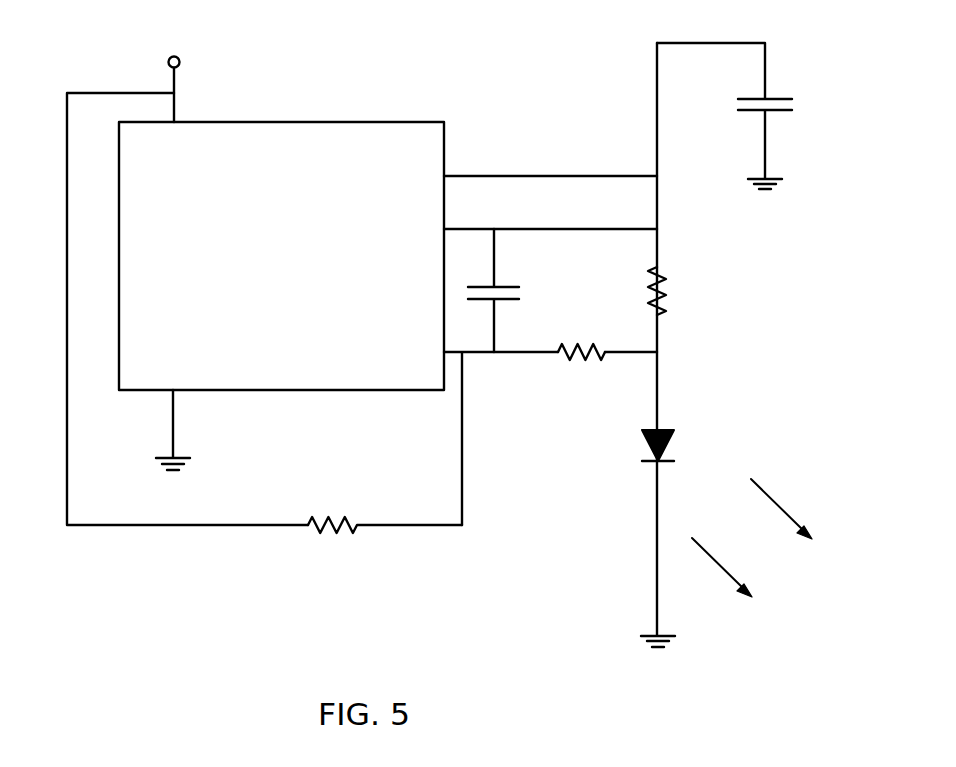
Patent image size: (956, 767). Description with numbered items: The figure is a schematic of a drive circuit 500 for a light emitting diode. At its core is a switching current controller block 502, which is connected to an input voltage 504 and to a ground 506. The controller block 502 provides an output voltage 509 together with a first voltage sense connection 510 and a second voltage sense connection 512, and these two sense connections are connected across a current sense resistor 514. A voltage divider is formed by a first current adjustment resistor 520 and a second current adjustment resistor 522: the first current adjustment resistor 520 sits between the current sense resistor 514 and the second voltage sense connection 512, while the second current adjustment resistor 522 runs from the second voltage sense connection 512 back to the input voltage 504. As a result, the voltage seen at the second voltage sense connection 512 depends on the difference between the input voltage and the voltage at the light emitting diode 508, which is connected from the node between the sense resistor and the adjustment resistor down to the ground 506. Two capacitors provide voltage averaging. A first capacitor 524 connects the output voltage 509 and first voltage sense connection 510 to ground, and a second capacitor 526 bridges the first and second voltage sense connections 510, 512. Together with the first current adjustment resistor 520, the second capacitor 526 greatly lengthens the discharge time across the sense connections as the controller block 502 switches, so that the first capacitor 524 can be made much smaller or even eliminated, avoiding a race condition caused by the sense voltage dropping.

The drive circuit 500 is at (123, 634).
The switching current controller block 502 is at (205, 265).
The input voltage 504 is at (173, 91).
The ground 506 is at (173, 416).
The light emitting diode 508 is at (648, 441).
The output voltage 509 is at (462, 173).
The first voltage sense connection 510 is at (458, 229).
The second voltage sense connection 512 is at (448, 351).
The current sense resistor 514 is at (650, 292).
The first current adjustment resistor 520 is at (572, 347).
The second current adjustment resistor 522 is at (338, 531).
The first capacitor 524 is at (752, 98).
The second capacitor 526 is at (505, 285).